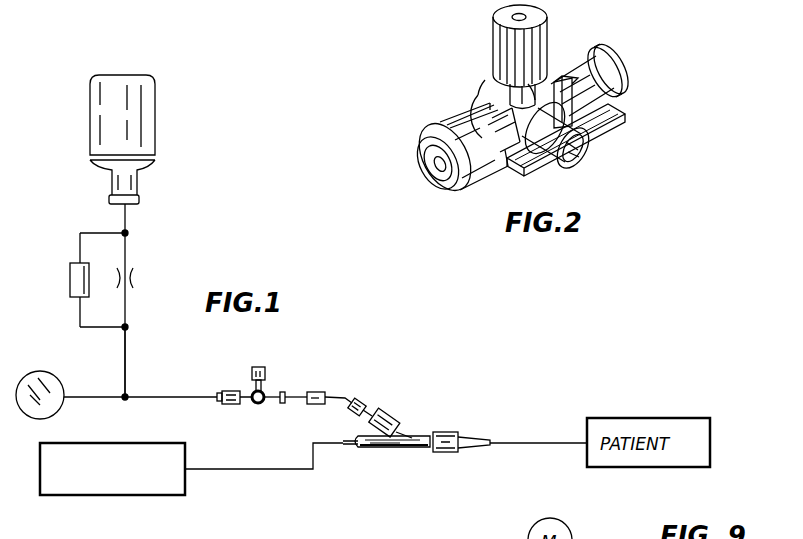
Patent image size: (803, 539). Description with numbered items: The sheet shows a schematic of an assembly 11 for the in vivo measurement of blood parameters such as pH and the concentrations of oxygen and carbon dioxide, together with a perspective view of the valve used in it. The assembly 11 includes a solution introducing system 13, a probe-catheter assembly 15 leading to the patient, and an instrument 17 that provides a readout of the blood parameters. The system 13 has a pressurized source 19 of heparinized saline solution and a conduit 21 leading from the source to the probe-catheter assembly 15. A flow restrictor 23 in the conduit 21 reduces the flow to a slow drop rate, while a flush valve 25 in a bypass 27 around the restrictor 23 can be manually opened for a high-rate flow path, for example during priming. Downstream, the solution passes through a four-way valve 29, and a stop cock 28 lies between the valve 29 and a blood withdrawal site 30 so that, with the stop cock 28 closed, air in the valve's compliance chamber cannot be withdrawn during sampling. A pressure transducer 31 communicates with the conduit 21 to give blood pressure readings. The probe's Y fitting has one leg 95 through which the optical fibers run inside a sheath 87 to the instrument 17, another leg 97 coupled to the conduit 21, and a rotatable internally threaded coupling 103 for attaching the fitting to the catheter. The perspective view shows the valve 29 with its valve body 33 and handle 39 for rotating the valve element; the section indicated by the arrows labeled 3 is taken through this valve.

In FIG. 1, the assembly 11 is at (376, 374).
In FIG. 1, the solution introducing system 13 is at (132, 364).
In FIG. 1, the probe-catheter assembly 15 is at (432, 430).
In FIG. 1, the instrument 17 is at (60, 496).
In FIG. 1, the pressurized source 19 is at (155, 118).
In FIG. 1, the conduit 21 is at (127, 222).
In FIG. 1, the flow restrictor 23 is at (135, 278).
In FIG. 1, the flush valve 25 is at (70, 285).
In FIG. 1, the bypass 27 is at (80, 233).
In FIG. 1, the stop cock 28 is at (313, 391).
In FIG. 1, the four-way valve 29 is at (265, 388).
In FIG. 2, the four-way valve 29 is at (515, 102).
In FIG. 1, the blood withdrawal site 30 is at (366, 402).
In FIG. 1, the pressure transducer 31 is at (33, 373).
In FIG. 2, the valve body 33 is at (488, 90).
In FIG. 2, the handle 39 is at (612, 127).
In FIG. 1, the sheath 87 is at (226, 471).
In FIG. 1, the leg 95 is at (392, 448).
In FIG. 1, the leg 97 is at (408, 433).
In FIG. 1, the rotatable internally threaded coupling 103 is at (440, 453).
In FIG. 2, the section line for FIG. 3 is at (688, 63).